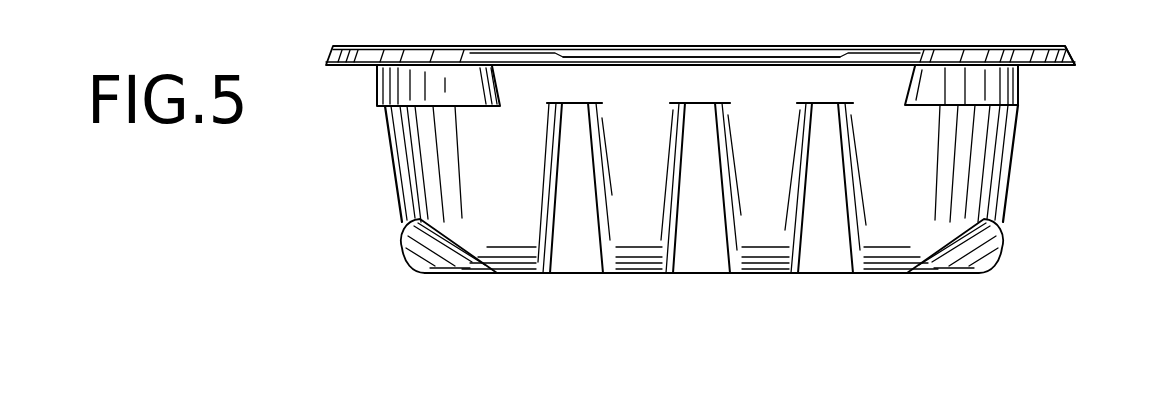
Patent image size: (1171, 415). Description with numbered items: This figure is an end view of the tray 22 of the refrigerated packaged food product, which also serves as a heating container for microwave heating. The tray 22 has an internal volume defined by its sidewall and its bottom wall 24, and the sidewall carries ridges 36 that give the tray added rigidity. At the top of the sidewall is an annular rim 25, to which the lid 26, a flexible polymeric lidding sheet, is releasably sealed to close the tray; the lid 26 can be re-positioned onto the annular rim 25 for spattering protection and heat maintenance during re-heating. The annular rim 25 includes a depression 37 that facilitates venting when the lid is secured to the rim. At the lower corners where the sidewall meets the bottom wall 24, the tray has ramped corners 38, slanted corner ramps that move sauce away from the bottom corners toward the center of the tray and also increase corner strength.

The tray 22 is at (1012, 165).
The bottom wall 24 is at (500, 199).
The annular rim 25 is at (1068, 50).
The lid 26 is at (808, 46).
The ridges 36 is at (815, 215).
The depression 37 is at (632, 47).
The ramped corners 38 is at (412, 265).